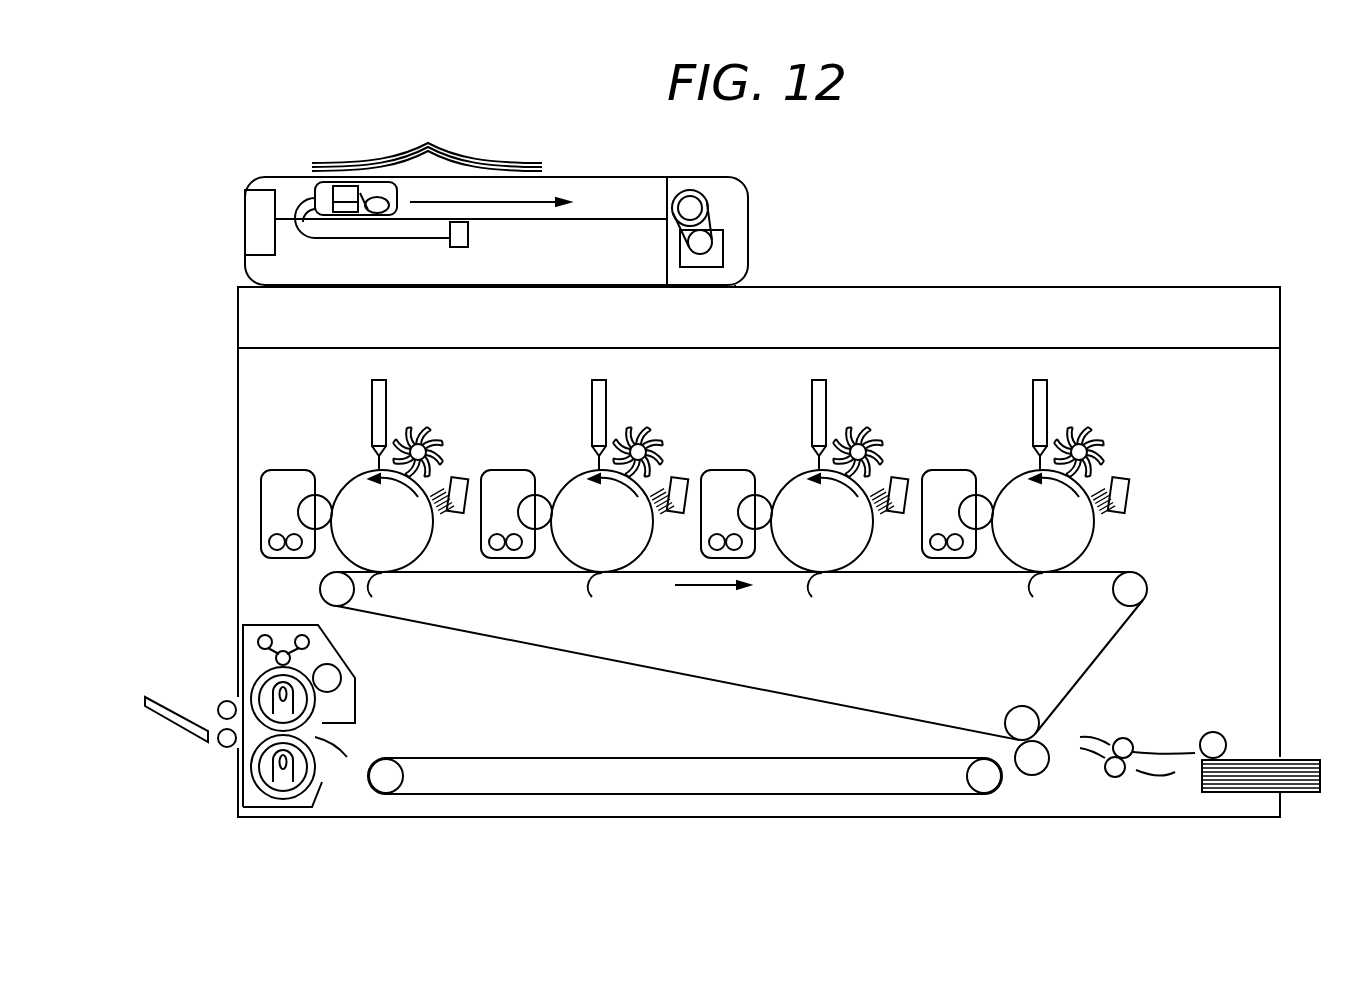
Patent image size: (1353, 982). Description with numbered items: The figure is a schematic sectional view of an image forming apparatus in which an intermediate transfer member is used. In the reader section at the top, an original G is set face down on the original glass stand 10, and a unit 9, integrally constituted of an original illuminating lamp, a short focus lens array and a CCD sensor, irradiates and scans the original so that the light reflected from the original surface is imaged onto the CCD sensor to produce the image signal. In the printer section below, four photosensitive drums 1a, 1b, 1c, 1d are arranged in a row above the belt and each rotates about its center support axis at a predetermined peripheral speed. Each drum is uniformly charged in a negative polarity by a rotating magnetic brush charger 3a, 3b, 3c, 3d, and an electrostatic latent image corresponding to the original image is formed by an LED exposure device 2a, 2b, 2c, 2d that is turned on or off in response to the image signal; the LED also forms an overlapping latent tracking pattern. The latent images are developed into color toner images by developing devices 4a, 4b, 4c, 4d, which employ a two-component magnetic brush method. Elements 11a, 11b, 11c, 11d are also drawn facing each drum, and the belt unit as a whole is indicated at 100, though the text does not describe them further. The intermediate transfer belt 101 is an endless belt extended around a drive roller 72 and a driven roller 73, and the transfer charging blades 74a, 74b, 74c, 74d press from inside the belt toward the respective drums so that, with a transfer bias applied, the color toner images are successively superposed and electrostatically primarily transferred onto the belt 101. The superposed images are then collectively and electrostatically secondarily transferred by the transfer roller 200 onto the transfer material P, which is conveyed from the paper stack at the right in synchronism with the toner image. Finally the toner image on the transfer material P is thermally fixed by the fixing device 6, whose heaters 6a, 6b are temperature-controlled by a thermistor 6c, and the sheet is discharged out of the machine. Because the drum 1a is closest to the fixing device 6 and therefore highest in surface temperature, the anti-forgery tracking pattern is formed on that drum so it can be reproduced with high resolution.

The unit 9 is at (318, 186).
The original G is at (456, 160).
The original glass stand 10 is at (752, 222).
The photosensitive drum 1a is at (420, 543).
The photosensitive drum 1b is at (640, 543).
The photosensitive drum 1c is at (860, 543).
The photosensitive drum 1d is at (1081, 543).
The LED exposure device 2a is at (372, 393).
The LED exposure device 2b is at (592, 393).
The LED exposure device 2c is at (812, 393).
The LED exposure device 2d is at (1033, 393).
The magnetic brush charger 3a is at (433, 434).
The magnetic brush charger 3b is at (653, 434).
The magnetic brush charger 3c is at (873, 434).
The magnetic brush charger 3d is at (1094, 434).
The developing device 4a is at (291, 471).
The developing device 4b is at (511, 471).
The developing device 4c is at (731, 471).
The developing device 4d is at (952, 471).
The exposure device 11a is at (459, 480).
The exposure device 11b is at (679, 480).
The exposure device 11c is at (899, 480).
The exposure device 11d is at (1120, 480).
The transfer charging blade 74a is at (377, 593).
The transfer charging blade 74b is at (597, 593).
The transfer charging blade 74c is at (817, 593).
The transfer charging blade 74d is at (1038, 593).
The drive roller 72 is at (320, 589).
The driven roller 73 is at (1148, 596).
The intermediate transfer belt unit 100 is at (720, 612).
The intermediate transfer belt 101 is at (760, 694).
The transfer roller 200 is at (1044, 768).
The fixing device 6 is at (295, 680).
The heater 6a is at (262, 690).
The heater 6b is at (265, 768).
The thermistor 6c is at (341, 680).
The transfer material P is at (1318, 760).